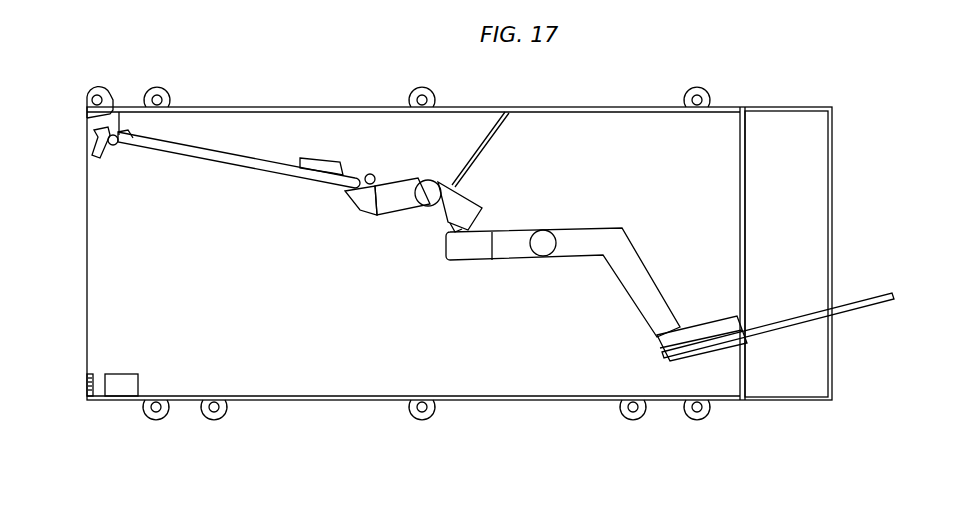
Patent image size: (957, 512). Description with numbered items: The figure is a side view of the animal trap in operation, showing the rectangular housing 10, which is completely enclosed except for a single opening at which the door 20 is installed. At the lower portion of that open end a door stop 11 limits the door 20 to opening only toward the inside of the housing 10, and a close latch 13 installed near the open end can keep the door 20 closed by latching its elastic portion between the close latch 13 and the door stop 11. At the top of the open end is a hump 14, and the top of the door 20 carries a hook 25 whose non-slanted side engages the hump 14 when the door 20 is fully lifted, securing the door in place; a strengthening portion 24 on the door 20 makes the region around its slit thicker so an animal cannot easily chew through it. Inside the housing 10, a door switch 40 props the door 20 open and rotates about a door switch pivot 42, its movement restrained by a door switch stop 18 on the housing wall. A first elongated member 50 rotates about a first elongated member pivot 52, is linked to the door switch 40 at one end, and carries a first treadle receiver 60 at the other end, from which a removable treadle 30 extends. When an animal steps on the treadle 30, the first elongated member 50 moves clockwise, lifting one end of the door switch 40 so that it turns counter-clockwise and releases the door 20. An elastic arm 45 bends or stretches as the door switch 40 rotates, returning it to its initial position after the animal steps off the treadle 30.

The housing 10 is at (352, 106).
The door stop 11 is at (86, 385).
The close latch 13 is at (120, 378).
The hump 14 is at (112, 106).
The door switch stop 18 is at (374, 179).
The door 20 is at (205, 160).
The strengthening portion 24 is at (305, 160).
The hook 25 is at (116, 148).
The treadle 30 is at (862, 300).
The door switch 40 is at (392, 200).
The door switch pivot 42 is at (428, 198).
The elastic arm 45 is at (500, 140).
The first elongated member 50 is at (514, 248).
The first elongated member pivot 52 is at (543, 240).
The first treadle receiver 60 is at (710, 322).